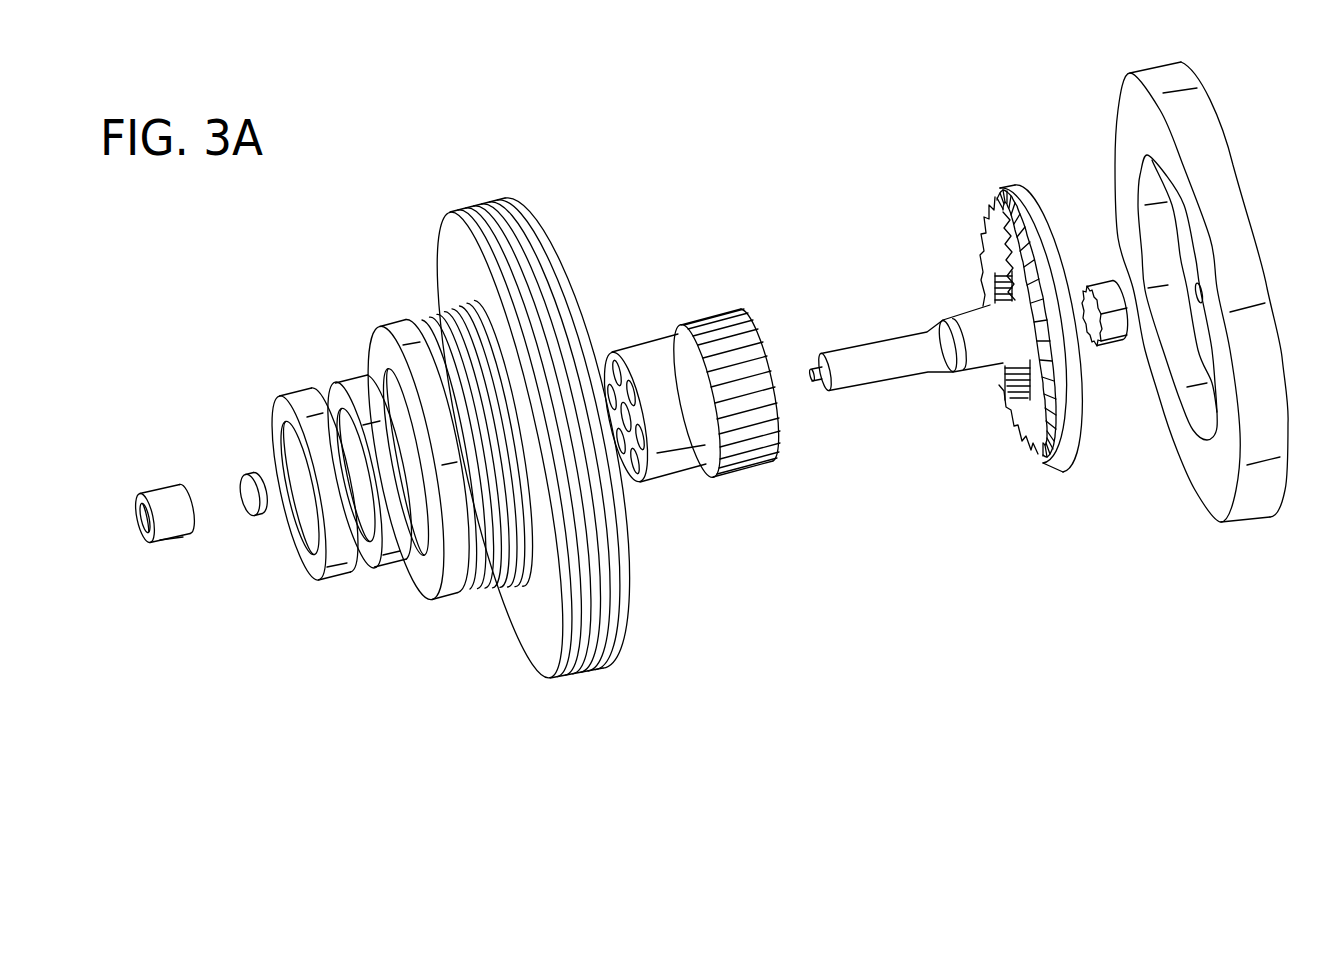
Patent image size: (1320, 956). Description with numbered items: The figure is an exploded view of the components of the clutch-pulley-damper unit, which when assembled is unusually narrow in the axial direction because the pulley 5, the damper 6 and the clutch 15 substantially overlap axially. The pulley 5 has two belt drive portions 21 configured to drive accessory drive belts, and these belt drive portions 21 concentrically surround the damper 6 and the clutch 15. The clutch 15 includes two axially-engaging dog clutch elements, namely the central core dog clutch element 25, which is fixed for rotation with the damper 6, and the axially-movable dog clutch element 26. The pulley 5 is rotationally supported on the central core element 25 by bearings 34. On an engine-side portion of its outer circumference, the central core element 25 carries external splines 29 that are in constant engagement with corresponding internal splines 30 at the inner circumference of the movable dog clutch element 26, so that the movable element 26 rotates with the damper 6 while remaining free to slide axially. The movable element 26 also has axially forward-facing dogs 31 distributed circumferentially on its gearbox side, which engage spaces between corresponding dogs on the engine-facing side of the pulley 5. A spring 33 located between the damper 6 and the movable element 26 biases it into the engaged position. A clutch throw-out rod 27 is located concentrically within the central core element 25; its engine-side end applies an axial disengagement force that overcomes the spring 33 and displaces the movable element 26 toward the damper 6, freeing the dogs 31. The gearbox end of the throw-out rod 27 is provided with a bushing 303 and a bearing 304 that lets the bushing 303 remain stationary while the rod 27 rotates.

The pulley 5 is at (382, 327).
The damper 6 is at (1227, 140).
The clutch 15 is at (588, 278).
The belt drive portions 21 is at (496, 200).
The central core dog clutch element 25 is at (690, 470).
The movable dog clutch element 26 is at (1057, 475).
The clutch throw-out rod 27 is at (907, 380).
The external splines 29 is at (708, 318).
The internal splines 30 is at (990, 285).
The forward-facing dogs 31 is at (982, 227).
The spring 33 is at (1118, 345).
The bearings 34 is at (352, 376).
The bushing 303 is at (176, 541).
The bearing 304 is at (256, 518).